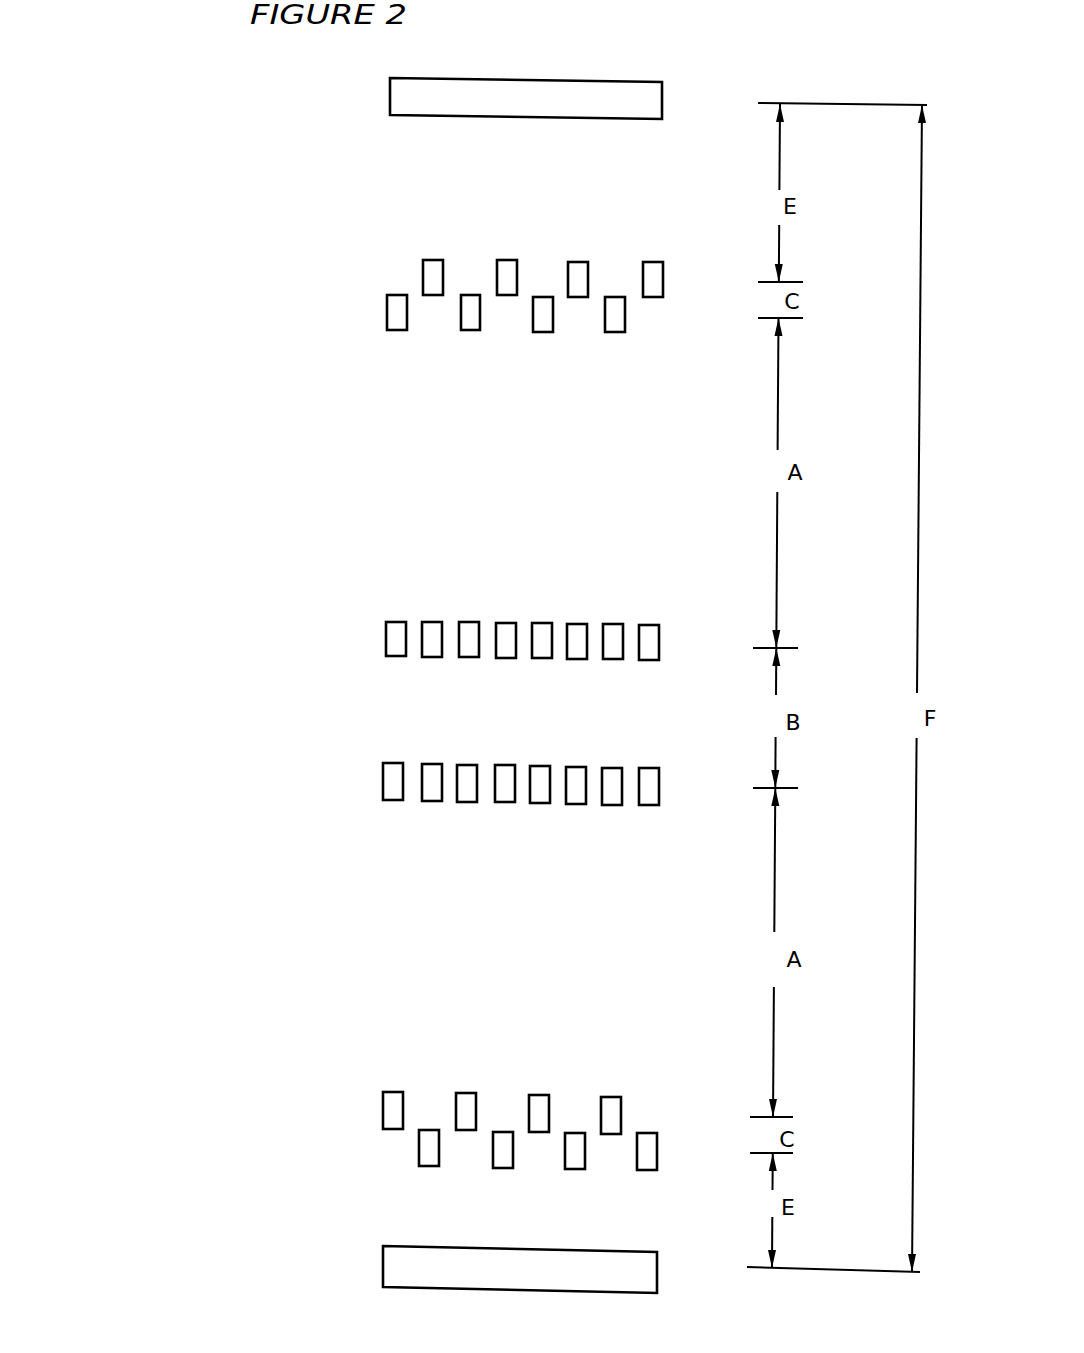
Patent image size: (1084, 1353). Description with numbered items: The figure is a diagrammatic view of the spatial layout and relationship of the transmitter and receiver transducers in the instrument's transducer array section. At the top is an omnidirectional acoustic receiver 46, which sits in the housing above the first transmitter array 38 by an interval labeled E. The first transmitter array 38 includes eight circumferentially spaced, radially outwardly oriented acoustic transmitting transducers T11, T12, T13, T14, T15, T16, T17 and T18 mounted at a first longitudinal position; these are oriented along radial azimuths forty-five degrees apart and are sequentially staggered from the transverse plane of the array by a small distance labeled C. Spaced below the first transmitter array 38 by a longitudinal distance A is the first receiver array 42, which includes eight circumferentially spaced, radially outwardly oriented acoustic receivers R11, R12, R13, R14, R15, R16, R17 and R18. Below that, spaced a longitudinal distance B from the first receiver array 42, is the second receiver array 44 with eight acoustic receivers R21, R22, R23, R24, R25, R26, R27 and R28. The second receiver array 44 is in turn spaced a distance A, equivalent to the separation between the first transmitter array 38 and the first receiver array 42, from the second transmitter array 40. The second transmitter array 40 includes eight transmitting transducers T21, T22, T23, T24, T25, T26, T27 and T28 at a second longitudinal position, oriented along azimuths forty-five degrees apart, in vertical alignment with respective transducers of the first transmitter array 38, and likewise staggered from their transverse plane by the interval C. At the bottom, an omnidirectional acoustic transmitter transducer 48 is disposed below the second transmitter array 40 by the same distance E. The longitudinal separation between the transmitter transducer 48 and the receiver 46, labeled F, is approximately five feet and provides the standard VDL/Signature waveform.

The omnidirectional acoustic receiver 46 is at (372, 113).
The first transmitter array 38 is at (375, 298).
The first receiver array 42 is at (370, 644).
The second receiver array 44 is at (371, 789).
The second transmitter array 40 is at (368, 1131).
The omnidirectional acoustic transmitter transducer 48 is at (360, 1284).
The acoustic transmitting transducer T11 is at (395, 329).
The acoustic transmitting transducer T12 is at (435, 264).
The acoustic transmitting transducer T13 is at (470, 329).
The acoustic transmitting transducer T14 is at (505, 264).
The acoustic transmitting transducer T15 is at (546, 330).
The acoustic transmitting transducer T16 is at (575, 265).
The acoustic transmitting transducer T17 is at (616, 330).
The acoustic transmitting transducer T18 is at (651, 265).
The acoustic receiver R11 is at (391, 654).
The acoustic receiver R12 is at (435, 625).
The acoustic receiver R13 is at (465, 654).
The acoustic receiver R14 is at (505, 626).
The acoustic receiver R15 is at (537, 655).
The acoustic receiver R16 is at (575, 626).
The acoustic receiver R17 is at (613, 655).
The acoustic receiver R18 is at (647, 627).
The acoustic receiver R21 is at (393, 769).
The acoustic receiver R22 is at (431, 800).
The acoustic receiver R23 is at (466, 770).
The acoustic receiver R24 is at (503, 801).
The acoustic receiver R25 is at (539, 770).
The acoustic receiver R26 is at (577, 802).
The acoustic receiver R27 is at (611, 771).
The acoustic receiver R28 is at (649, 802).
The transmitting transducer T21 is at (387, 1097).
The transmitting transducer T22 is at (430, 1163).
The transmitting transducer T23 is at (463, 1098).
The transmitting transducer T24 is at (503, 1164).
The transmitting transducer T25 is at (536, 1099).
The transmitting transducer T26 is at (577, 1165).
The transmitting transducer T27 is at (610, 1100).
The transmitting transducer T28 is at (650, 1165).